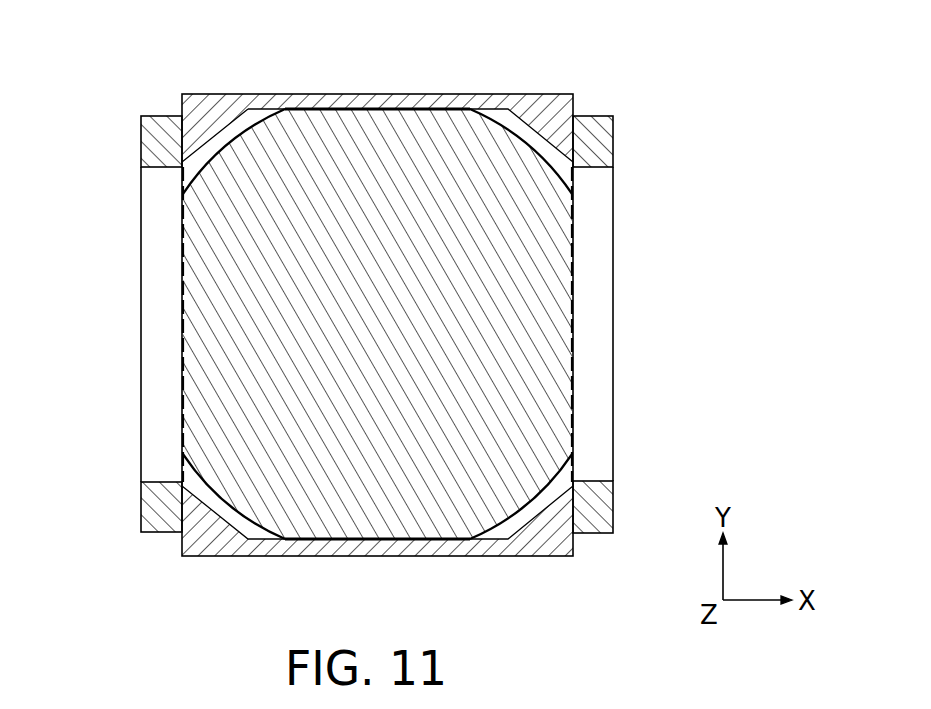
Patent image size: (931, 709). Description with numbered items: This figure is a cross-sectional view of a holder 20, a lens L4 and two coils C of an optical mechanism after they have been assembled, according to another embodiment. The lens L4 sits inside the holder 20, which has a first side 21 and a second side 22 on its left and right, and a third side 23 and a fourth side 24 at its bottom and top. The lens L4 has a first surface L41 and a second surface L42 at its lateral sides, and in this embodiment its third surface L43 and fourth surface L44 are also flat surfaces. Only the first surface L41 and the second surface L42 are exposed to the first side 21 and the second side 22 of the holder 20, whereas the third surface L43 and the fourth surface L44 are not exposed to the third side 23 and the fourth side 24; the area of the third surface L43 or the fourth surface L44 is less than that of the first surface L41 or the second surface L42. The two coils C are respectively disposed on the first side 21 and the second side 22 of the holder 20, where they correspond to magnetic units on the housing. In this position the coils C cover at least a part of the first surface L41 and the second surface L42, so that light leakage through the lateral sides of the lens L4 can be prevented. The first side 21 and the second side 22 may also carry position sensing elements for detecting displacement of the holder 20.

The holder 20 is at (214, 88).
The first side 21 is at (178, 138).
The second side 22 is at (577, 137).
The third side 23 is at (250, 556).
The fourth side 24 is at (273, 93).
The lens L4 is at (410, 125).
The first surface L41 is at (182, 327).
The second surface L42 is at (575, 328).
The third surface L43 is at (423, 540).
The fourth surface L44 is at (450, 108).
The coil C is at (157, 228).